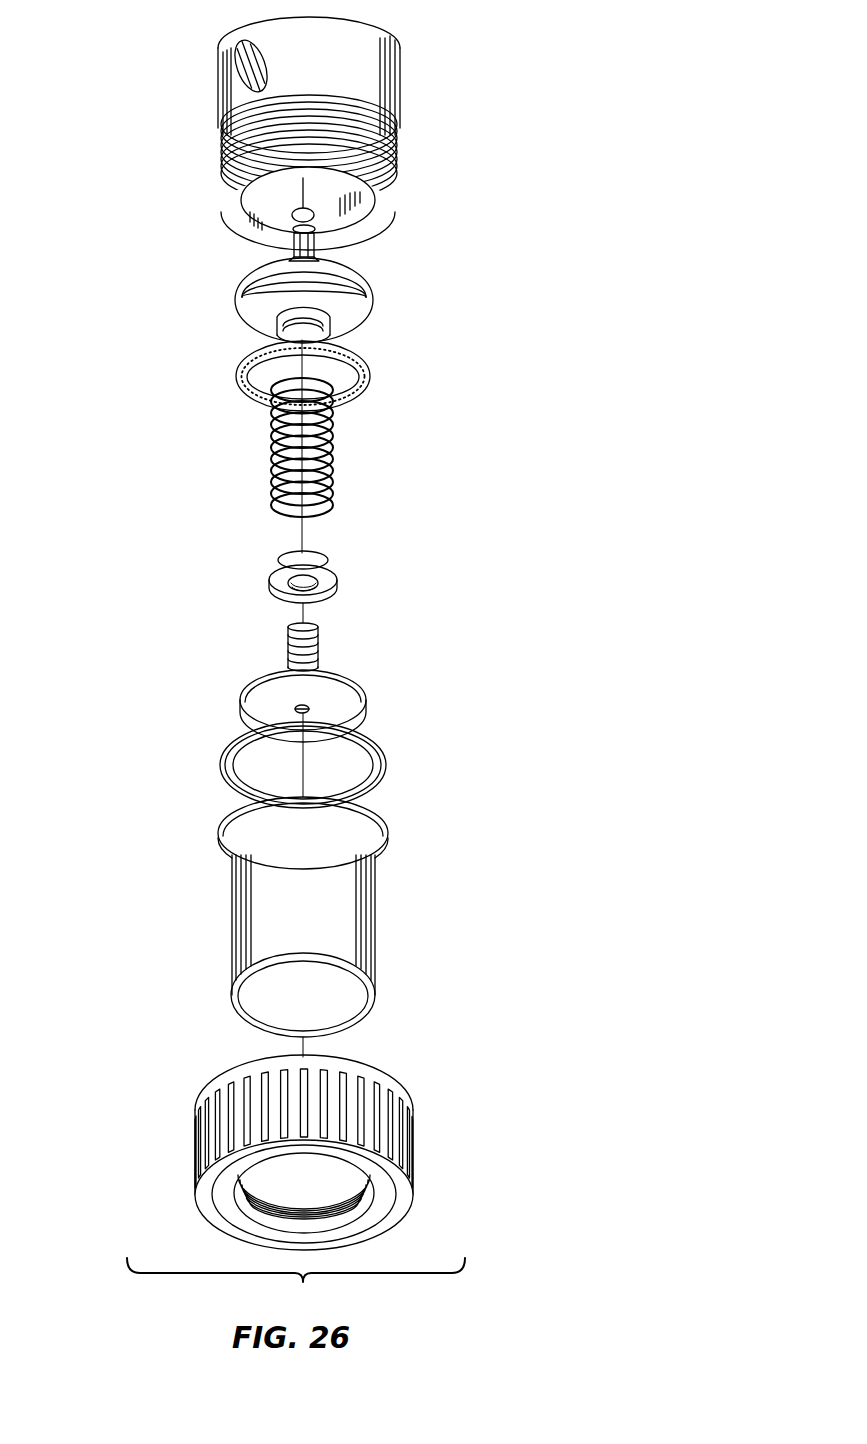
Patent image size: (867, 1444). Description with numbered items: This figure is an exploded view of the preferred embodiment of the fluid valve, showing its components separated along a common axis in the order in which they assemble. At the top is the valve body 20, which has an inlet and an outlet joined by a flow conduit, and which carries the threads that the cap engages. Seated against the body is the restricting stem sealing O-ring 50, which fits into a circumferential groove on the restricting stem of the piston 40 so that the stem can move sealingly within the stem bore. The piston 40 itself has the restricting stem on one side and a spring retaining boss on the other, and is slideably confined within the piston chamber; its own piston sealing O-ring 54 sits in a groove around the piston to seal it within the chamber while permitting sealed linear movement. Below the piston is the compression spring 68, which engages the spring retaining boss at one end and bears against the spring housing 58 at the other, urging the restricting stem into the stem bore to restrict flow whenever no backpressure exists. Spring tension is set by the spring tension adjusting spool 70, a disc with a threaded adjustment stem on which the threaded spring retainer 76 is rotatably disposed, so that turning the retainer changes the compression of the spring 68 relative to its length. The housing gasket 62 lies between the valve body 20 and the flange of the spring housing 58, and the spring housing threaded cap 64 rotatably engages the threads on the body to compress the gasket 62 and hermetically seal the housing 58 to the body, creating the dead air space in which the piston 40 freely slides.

The valve body 20 is at (397, 100).
The restricting stem sealing O-ring 50 is at (290, 217).
The piston 40 is at (375, 320).
The piston sealing O-ring 54 is at (237, 383).
The compression spring 68 is at (335, 481).
The threaded spring retainer 76 is at (270, 582).
The spring tension adjusting spool 70 is at (365, 697).
The housing gasket 62 is at (220, 773).
The spring housing 58 is at (375, 968).
The spring housing threaded cap 64 is at (197, 1160).